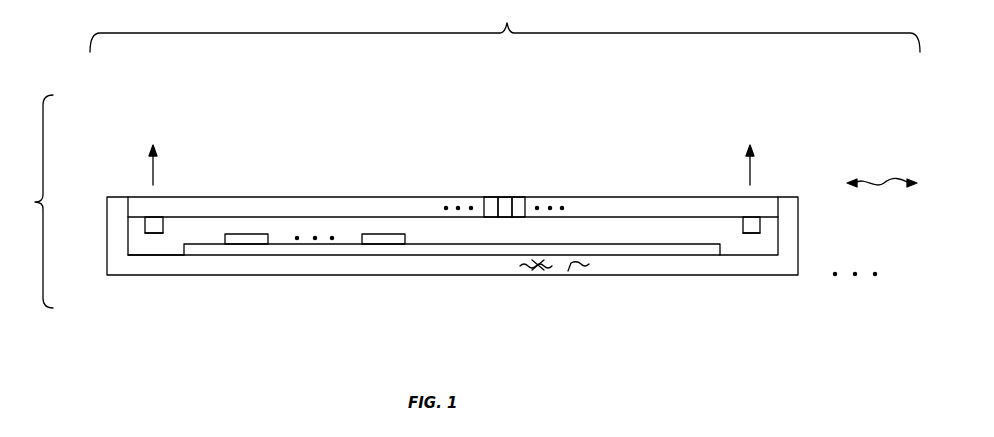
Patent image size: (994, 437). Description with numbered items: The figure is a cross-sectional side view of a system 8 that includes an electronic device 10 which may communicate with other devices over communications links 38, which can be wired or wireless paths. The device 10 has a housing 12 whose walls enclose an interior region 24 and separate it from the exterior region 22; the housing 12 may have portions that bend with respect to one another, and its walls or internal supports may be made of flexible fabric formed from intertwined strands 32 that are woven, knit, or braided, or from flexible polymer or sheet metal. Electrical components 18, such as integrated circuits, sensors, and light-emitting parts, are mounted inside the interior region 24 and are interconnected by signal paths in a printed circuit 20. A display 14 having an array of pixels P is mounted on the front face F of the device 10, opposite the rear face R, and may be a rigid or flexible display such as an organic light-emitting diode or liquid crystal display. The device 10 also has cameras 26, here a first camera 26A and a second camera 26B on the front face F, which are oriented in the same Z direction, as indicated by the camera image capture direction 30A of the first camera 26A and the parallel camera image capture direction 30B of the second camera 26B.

The system 8 is at (505, 26).
The electronic device 10 is at (32, 201).
The housing 12 is at (792, 233).
The display 14 is at (384, 167).
The electrical components 18 is at (268, 238).
The printed circuit 20 is at (470, 247).
The exterior region 22 is at (317, 119).
The interior region 24 is at (165, 247).
The cameras 26 is at (146, 246).
The first camera 26A is at (164, 228).
The second camera 26B is at (744, 227).
The camera image capture direction 30A is at (153, 170).
The parallel camera image capture direction 30B is at (750, 173).
The strands 32 is at (574, 270).
The communications links 38 is at (884, 182).
The pixels P is at (490, 197).
The front face F is at (619, 119).
The rear face R is at (647, 307).